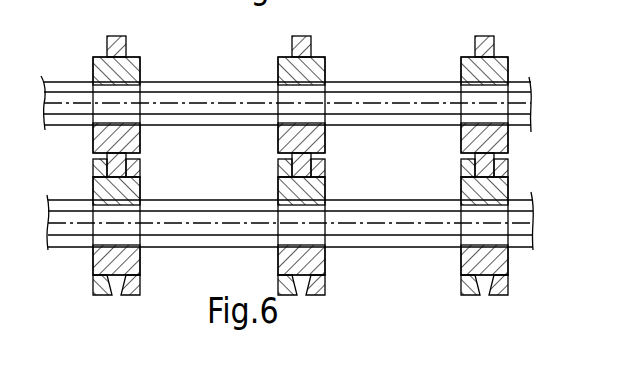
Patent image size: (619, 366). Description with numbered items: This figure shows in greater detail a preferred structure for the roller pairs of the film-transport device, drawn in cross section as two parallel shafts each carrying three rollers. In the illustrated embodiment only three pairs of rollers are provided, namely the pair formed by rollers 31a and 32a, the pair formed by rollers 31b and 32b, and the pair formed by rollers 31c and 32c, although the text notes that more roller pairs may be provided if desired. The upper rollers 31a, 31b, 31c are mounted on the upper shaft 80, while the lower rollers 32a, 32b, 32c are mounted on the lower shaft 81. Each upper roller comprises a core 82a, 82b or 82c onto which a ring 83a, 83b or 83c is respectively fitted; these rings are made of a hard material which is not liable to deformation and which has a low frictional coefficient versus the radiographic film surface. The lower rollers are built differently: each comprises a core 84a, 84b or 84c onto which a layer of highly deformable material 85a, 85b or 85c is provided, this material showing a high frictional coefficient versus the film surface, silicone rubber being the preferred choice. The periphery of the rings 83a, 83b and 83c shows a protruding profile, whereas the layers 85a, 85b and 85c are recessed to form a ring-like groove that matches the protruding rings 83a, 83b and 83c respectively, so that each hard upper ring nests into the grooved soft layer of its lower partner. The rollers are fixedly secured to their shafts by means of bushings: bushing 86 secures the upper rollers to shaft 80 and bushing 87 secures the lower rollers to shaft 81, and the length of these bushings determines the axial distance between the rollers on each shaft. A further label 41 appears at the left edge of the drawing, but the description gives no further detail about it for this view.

The frame 41 is at (1, 56).
The shaft 80 is at (212, 100).
The shaft 81 is at (212, 222).
The bushing 86 is at (65, 124).
The bushing 87 is at (70, 204).
The roller 31a is at (146, 60).
The roller 31b is at (323, 59).
The roller 31c is at (507, 58).
The roller 32a is at (93, 263).
The roller 32b is at (276, 263).
The roller 32c is at (458, 263).
The core 82a is at (146, 106).
The core 82b is at (333, 105).
The core 82c is at (511, 104).
The ring 83a is at (139, 34).
The ring 83b is at (330, 33).
The ring 83c is at (505, 33).
The core 84a is at (125, 233).
The core 84b is at (309, 232).
The core 84c is at (484, 232).
The layer of highly deformable material 85a is at (148, 291).
The layer of highly deformable material 85b is at (334, 290).
The layer of highly deformable material 85c is at (458, 290).